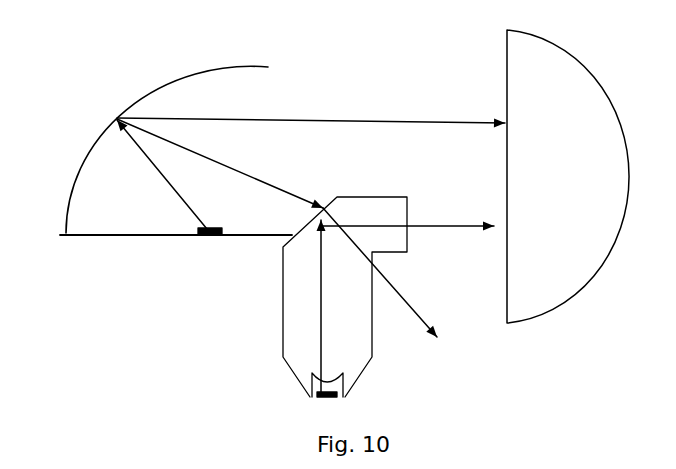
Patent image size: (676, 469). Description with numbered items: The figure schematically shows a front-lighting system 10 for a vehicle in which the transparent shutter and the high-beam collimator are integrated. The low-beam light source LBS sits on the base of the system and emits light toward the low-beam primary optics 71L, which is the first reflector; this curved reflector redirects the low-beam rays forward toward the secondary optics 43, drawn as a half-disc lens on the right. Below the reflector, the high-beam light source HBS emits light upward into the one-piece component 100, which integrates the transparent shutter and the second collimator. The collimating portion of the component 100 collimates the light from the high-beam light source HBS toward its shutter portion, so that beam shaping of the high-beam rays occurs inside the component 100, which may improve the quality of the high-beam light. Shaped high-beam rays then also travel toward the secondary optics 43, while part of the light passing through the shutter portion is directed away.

The low-beam primary optics 71L is at (154, 148).
The front-lighting system 10 is at (176, 268).
The low-beam light source LBS is at (201, 256).
The one-piece component 100 is at (347, 276).
The high-beam light source HBS is at (280, 395).
The secondary optics 43 is at (540, 176).